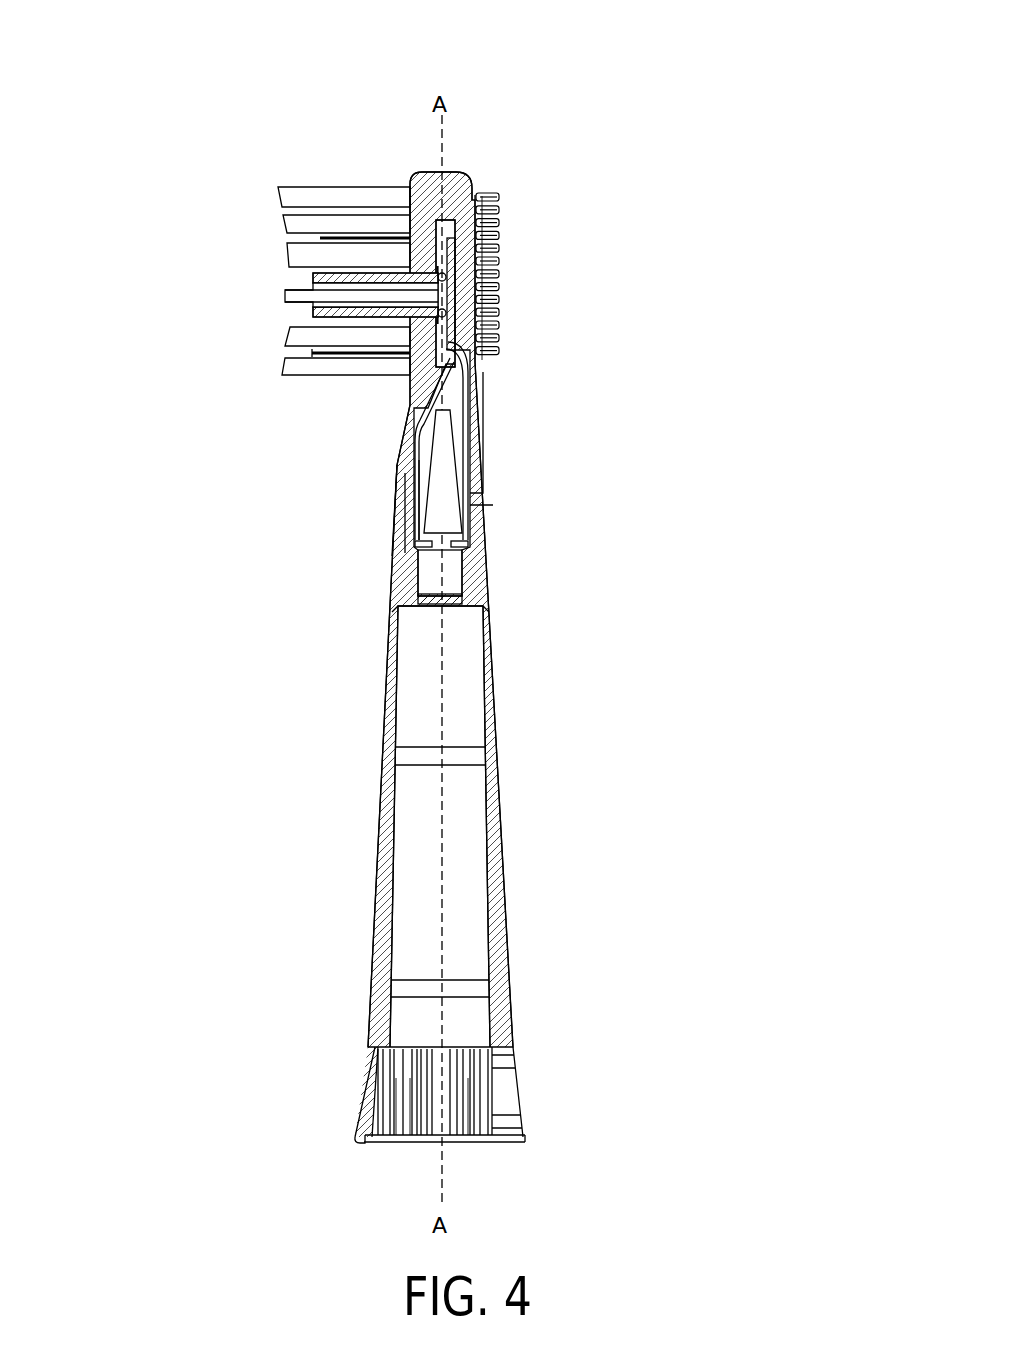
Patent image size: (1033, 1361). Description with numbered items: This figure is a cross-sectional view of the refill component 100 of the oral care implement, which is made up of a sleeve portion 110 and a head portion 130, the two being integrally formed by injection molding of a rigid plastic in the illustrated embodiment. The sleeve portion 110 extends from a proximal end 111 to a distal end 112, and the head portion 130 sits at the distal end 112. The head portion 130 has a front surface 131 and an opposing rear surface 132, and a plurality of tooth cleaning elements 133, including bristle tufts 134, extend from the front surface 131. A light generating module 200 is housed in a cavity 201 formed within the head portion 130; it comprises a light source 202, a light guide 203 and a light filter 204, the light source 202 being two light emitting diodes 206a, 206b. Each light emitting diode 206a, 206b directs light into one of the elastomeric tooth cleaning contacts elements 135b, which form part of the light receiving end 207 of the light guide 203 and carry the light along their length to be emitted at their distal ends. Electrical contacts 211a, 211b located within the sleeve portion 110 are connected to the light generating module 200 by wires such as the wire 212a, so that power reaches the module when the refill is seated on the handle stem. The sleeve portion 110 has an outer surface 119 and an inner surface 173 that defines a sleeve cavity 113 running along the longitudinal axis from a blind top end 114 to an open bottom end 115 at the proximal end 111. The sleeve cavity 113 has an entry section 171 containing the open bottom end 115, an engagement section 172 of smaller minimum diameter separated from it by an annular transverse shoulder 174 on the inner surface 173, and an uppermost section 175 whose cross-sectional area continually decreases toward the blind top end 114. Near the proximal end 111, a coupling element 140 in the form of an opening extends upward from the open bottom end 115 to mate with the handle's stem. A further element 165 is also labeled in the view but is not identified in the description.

The refill component 100 is at (672, 455).
The sleeve portion 110 is at (498, 862).
The proximal end 111 is at (357, 1140).
The distal end 112 is at (418, 417).
The sleeve cavity 113 is at (460, 1132).
The blind top end 114 is at (460, 402).
The open bottom end 115 is at (398, 1142).
The outer surface 119 is at (388, 677).
The head portion 130 is at (443, 200).
The front surface 131 is at (422, 277).
The rear surface 132 is at (495, 193).
The tooth cleaning elements 133 is at (302, 389).
The bristle tufts 134 is at (410, 200).
The elastomeric tooth cleaning contacts elements 135b is at (300, 277).
The coupling element 140 is at (507, 1097).
The spring feet 165 is at (472, 497).
The entry section 171 is at (422, 922).
The engagement section 172 is at (454, 569).
The inner surface 173 is at (402, 802).
The annular transverse shoulder 174 is at (484, 592).
The uppermost section 175 is at (449, 463).
The light generating module 200 is at (440, 322).
The cavity 201 is at (440, 218).
The light source 202 is at (500, 298).
The light guide 203 is at (331, 264).
The light filter 204 is at (500, 332).
The light emitting diode 206a is at (442, 262).
The light emitting diode 206b is at (443, 332).
The light receiving end 207 is at (320, 202).
The electrical contact 211a is at (428, 557).
The electrical contact 211b is at (463, 470).
The wire 212a is at (422, 494).